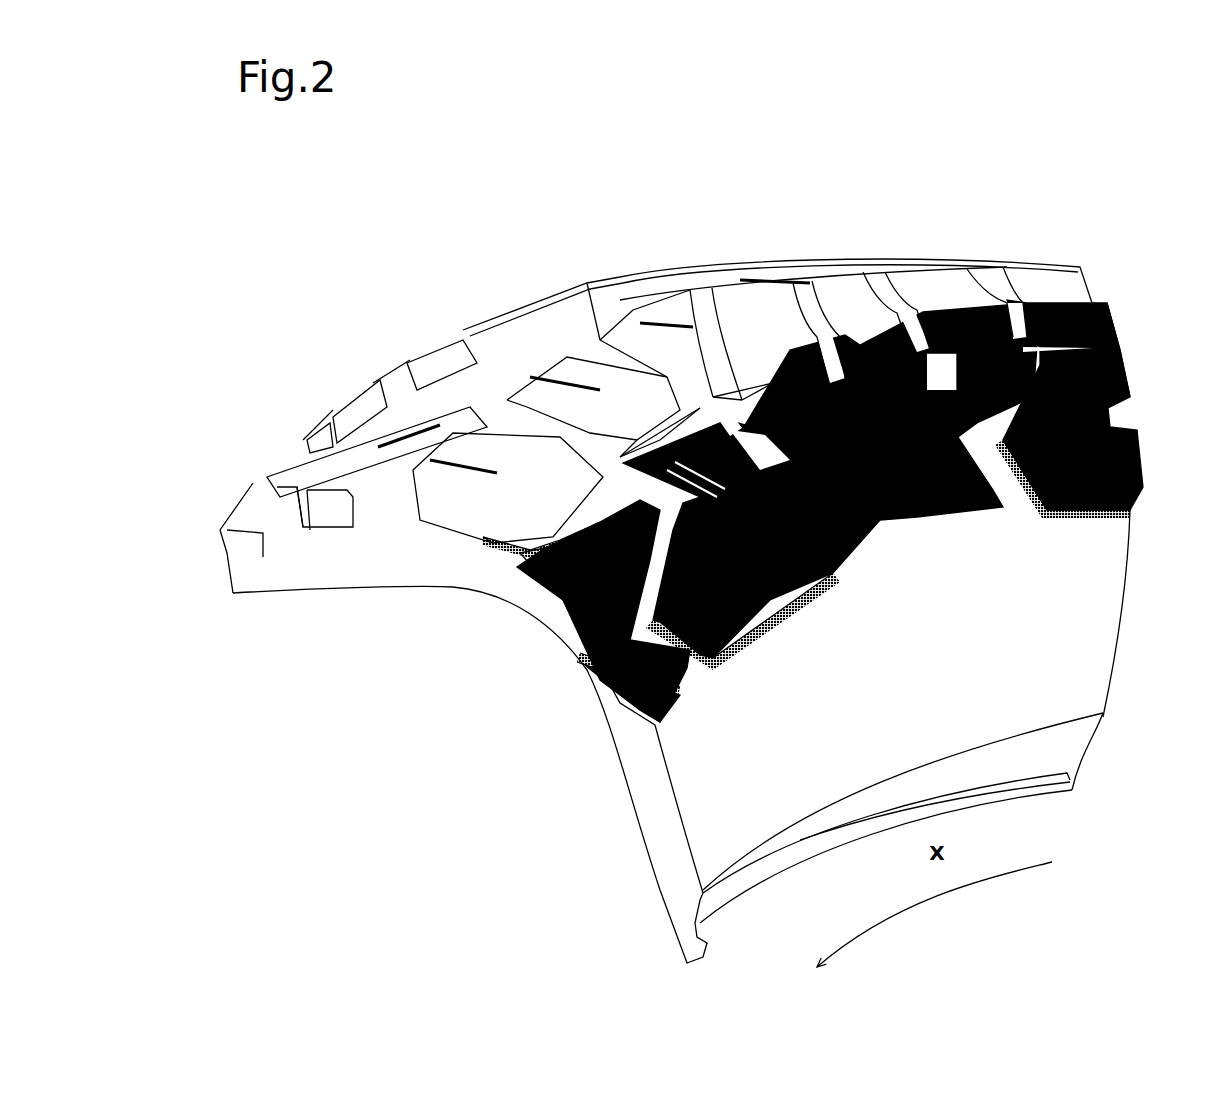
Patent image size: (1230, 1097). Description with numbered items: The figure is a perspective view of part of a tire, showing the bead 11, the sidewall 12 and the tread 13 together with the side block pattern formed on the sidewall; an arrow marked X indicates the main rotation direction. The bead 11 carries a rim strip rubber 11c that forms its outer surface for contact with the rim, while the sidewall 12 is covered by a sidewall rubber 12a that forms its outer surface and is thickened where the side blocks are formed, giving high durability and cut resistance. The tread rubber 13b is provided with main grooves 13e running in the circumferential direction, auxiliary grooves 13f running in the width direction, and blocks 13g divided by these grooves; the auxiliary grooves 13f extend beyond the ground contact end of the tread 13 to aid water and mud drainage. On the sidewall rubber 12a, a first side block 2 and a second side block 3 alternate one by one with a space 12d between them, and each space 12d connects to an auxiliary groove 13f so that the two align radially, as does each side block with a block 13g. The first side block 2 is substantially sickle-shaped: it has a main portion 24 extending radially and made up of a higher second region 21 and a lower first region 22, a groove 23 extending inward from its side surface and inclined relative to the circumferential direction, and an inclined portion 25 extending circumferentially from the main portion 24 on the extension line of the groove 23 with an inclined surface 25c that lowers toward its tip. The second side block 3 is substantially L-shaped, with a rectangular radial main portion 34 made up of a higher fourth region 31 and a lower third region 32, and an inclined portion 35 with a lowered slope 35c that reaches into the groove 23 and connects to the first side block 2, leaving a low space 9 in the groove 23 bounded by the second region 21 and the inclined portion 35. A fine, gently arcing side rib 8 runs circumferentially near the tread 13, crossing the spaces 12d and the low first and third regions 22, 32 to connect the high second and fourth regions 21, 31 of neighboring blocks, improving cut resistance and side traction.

The first side block 2 is at (895, 313).
The second side block 3 is at (983, 303).
The side rib 8 is at (1110, 323).
The space 9 is at (747, 620).
The bead 11 is at (1087, 743).
The rim strip rubber 11c is at (1060, 755).
The sidewall 12 is at (1130, 583).
The sidewall rubber 12a is at (1093, 663).
The space 12d is at (533, 583).
The tread 13 is at (1037, 260).
The tread rubber 13b is at (1073, 277).
The main groove 13e is at (315, 572).
The auxiliary groove 13f is at (503, 543).
The block 13g is at (433, 487).
The second region 21 is at (685, 450).
The first region 22 is at (637, 440).
The groove 23 is at (773, 593).
The main portion 24 is at (597, 197).
The inclined portion 25 is at (693, 640).
The inclined surface 25c is at (695, 642).
The fourth region 31 is at (773, 383).
The third region 32 is at (733, 383).
The main portion 34 is at (703, 197).
The inclined portion 35 is at (803, 583).
The lowered slope 35c is at (962, 515).